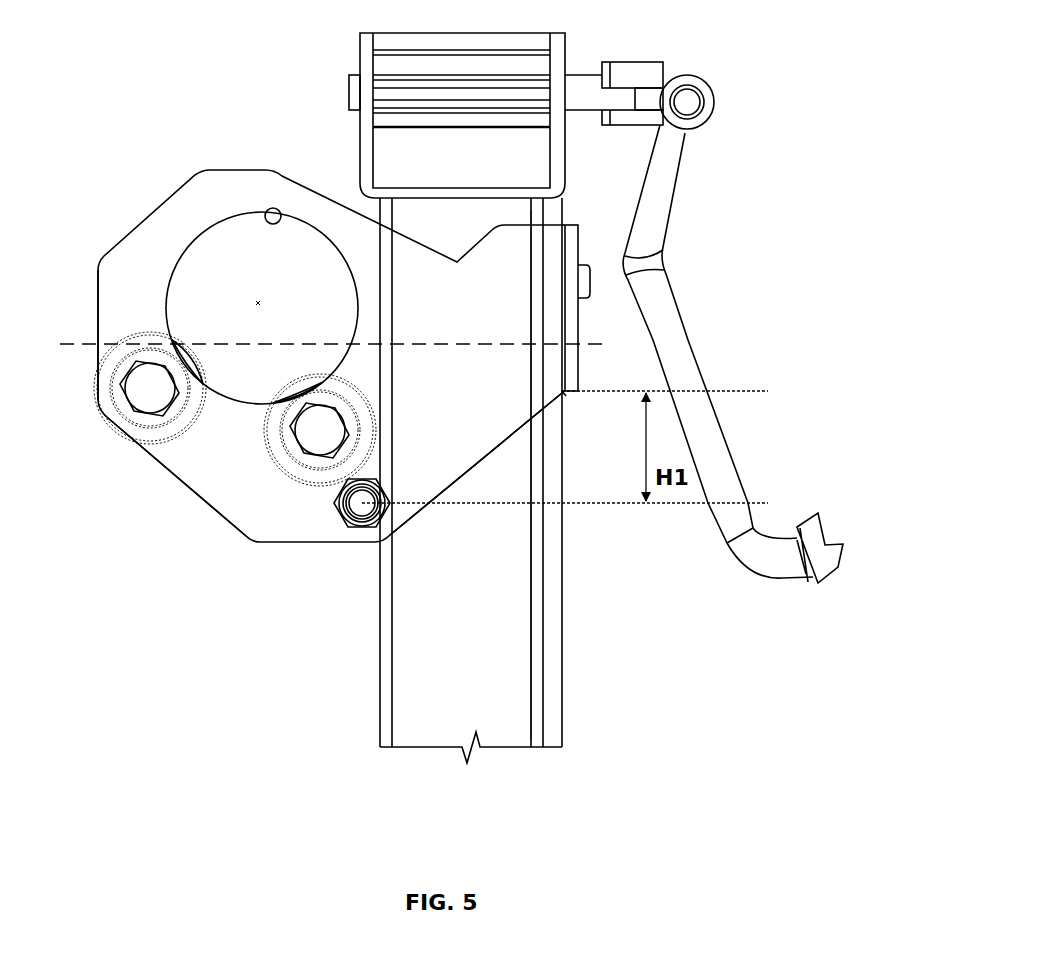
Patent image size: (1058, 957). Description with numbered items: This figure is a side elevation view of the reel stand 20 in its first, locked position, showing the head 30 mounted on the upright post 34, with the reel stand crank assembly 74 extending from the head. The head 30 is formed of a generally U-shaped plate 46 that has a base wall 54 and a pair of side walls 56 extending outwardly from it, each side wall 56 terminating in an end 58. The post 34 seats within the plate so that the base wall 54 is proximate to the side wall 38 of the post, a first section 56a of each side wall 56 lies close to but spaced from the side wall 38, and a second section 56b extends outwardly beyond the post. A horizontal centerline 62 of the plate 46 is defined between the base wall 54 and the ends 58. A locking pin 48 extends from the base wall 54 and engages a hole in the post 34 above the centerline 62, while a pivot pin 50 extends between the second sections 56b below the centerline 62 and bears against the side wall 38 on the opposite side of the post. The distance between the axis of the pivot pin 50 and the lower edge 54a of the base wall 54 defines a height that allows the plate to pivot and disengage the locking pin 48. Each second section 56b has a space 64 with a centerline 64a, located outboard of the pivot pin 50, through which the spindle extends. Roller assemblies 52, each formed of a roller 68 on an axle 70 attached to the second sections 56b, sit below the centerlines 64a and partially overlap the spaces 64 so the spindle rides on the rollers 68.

The reel stand 20 is at (570, 40).
The reel stand crank assembly 74 is at (636, 62).
The head 30 is at (273, 666).
The post 34 is at (498, 595).
The side wall 38 is at (552, 531).
The plate 46 is at (340, 346).
The locking pin 48 is at (581, 296).
The pivot pin 50 is at (360, 505).
The roller assembly 52 is at (175, 440).
The base wall 54 is at (570, 370).
The lower edge 54a is at (568, 395).
The side wall 56 is at (247, 190).
The first section 56a is at (470, 408).
The second section 56b is at (227, 490).
The end 58 is at (95, 283).
The horizontal centerline 62 is at (77, 343).
The space 64 is at (272, 212).
The centerline 64a is at (258, 303).
The roller 68 is at (190, 360).
The axle 70 is at (152, 388).